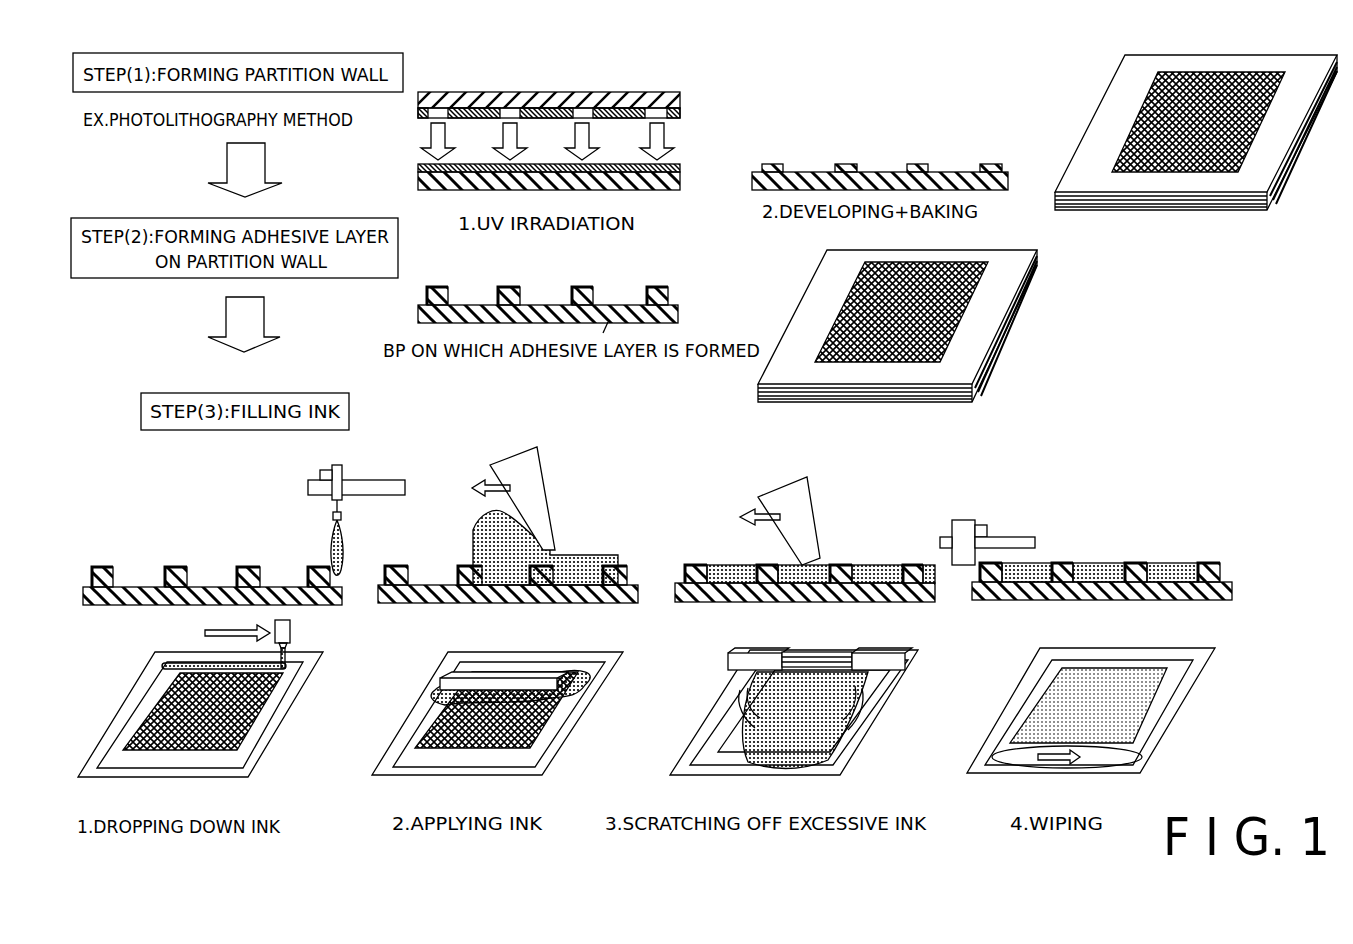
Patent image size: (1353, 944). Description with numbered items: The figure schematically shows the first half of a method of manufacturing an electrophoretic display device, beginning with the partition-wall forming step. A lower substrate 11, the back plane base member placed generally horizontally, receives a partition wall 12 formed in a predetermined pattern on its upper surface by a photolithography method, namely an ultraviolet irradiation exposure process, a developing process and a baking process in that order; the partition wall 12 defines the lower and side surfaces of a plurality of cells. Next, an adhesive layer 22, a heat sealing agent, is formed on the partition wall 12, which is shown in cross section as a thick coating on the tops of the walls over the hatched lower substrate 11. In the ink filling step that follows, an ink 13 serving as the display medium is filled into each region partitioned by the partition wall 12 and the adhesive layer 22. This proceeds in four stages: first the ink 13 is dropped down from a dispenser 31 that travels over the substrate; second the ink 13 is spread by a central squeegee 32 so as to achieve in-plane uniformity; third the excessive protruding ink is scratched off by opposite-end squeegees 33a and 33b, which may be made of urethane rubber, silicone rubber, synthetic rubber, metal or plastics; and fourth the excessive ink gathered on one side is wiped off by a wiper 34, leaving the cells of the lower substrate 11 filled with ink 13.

The lower substrate 11 is at (655, 183).
The partition wall 12 is at (772, 166).
The ink 13 is at (343, 548).
The adhesive layer 22 is at (655, 285).
The dispenser 31 is at (315, 485).
The central squeegee 32 is at (528, 478).
The opposite-end squeegee 33a is at (793, 500).
The opposite-end squeegee 33b is at (882, 660).
The wiper 34 is at (963, 525).